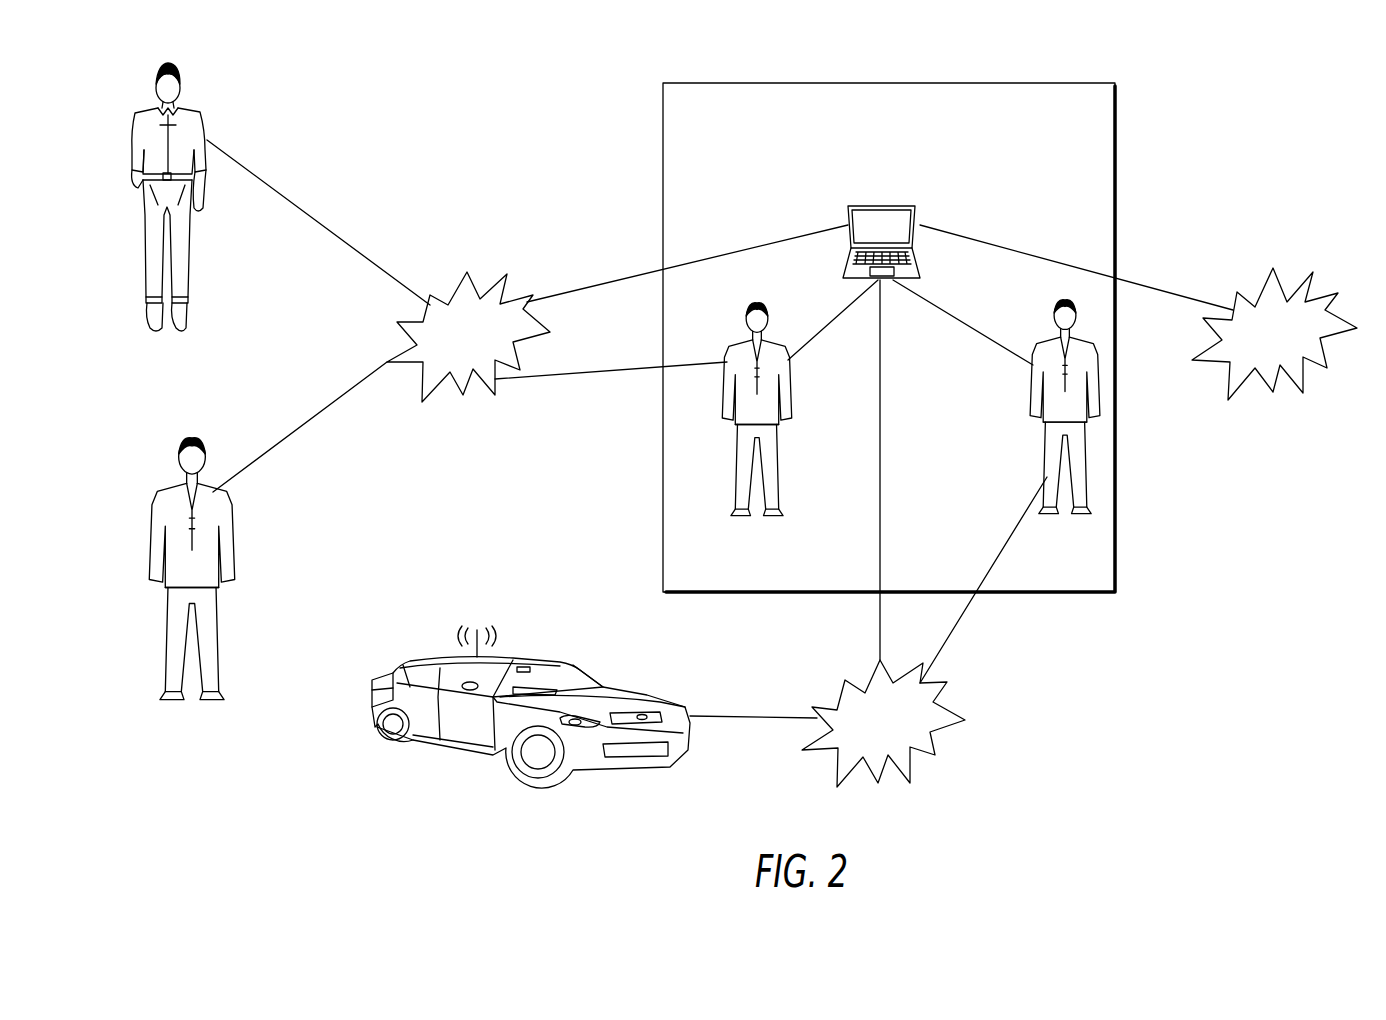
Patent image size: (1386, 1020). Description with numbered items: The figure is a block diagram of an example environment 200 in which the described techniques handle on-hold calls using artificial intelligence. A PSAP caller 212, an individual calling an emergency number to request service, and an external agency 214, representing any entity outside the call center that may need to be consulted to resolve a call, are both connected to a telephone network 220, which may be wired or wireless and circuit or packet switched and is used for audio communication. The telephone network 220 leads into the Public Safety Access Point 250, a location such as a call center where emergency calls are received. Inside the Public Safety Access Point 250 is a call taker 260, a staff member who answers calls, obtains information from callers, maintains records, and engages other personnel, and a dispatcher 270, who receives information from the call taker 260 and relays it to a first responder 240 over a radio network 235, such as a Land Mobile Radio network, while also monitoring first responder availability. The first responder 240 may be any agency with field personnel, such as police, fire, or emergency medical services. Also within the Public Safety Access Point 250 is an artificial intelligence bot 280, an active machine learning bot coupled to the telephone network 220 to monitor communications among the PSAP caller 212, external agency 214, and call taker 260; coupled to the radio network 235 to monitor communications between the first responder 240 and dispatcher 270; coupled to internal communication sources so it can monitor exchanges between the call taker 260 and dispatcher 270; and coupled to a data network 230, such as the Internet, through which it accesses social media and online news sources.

The environment 200 is at (342, 74).
The PSAP caller 212 is at (215, 349).
The external agency 214 is at (242, 722).
The telephone network 220 is at (473, 460).
The data network 230 is at (1290, 457).
The radio network 235 is at (935, 808).
The first responder 240 is at (587, 672).
The Public Safety Access Point 250 is at (888, 83).
The call taker 260 is at (795, 526).
The dispatcher 270 is at (970, 460).
The artificial intelligence bot 280 is at (1017, 182).